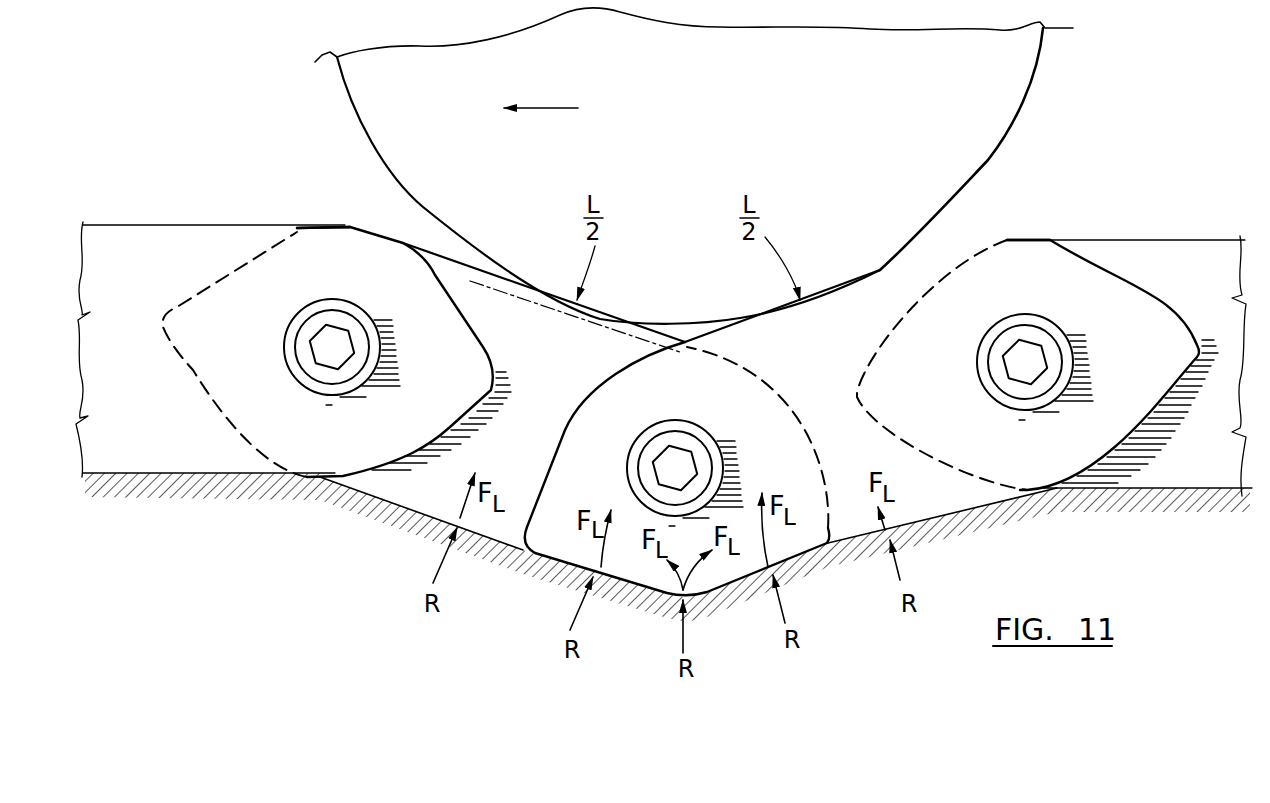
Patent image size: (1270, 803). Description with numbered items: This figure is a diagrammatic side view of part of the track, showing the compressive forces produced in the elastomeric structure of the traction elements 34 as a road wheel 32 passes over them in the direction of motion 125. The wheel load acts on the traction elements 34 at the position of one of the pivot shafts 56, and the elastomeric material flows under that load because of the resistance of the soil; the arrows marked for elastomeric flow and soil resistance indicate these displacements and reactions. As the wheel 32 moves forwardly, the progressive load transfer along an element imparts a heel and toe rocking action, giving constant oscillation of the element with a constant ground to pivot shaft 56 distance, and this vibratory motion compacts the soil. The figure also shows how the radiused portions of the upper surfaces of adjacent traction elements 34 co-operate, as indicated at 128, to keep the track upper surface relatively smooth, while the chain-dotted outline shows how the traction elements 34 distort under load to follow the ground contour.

The road wheel 32 is at (423, 208).
The traction element 34 is at (917, 257).
The pivot shaft 56 is at (353, 363).
The direction of motion 125 is at (552, 108).
The co-operation of radiused portions 128 is at (353, 224).